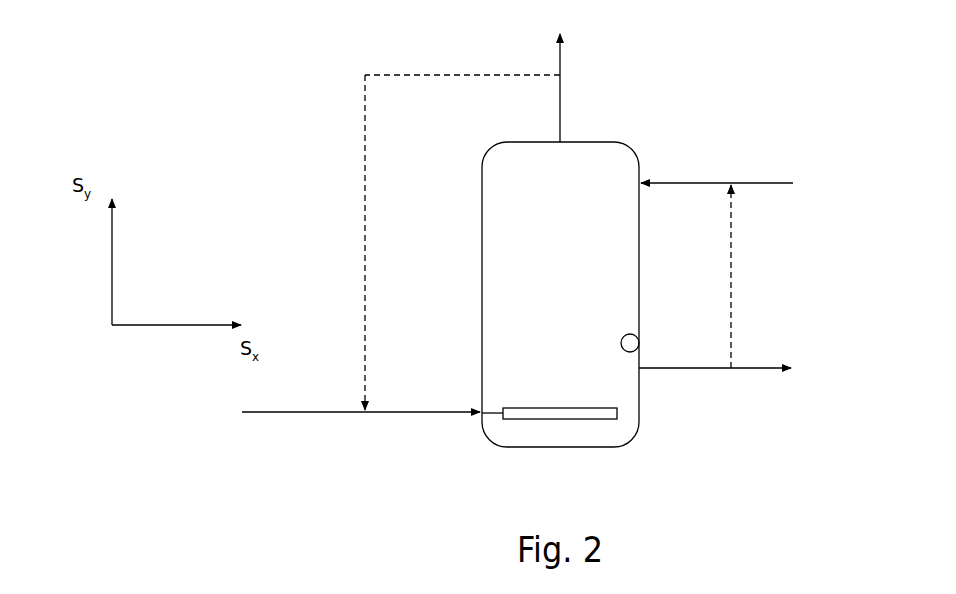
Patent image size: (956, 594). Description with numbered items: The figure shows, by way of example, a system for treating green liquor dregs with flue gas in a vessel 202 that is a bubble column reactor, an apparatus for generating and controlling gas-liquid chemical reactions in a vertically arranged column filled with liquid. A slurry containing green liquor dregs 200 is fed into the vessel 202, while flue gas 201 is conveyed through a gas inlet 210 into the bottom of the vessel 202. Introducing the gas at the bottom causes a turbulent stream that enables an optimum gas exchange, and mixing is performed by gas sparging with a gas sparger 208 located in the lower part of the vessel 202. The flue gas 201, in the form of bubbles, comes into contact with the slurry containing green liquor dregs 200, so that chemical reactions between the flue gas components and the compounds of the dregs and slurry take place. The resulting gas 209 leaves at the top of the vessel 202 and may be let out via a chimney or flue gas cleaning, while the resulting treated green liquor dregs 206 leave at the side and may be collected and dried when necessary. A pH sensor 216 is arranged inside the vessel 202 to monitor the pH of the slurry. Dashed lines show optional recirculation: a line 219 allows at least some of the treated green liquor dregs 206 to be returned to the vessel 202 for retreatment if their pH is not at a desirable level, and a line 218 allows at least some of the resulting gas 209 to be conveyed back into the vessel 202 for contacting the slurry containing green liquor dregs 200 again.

The slurry containing green liquor dregs 200 is at (758, 183).
The flue gas 201 is at (298, 410).
The vessel 202 is at (482, 250).
The treated green liquor dregs 206 is at (668, 368).
The gas sparger 208 is at (562, 408).
The resulting gas 209 is at (560, 118).
The gas inlet 210 is at (493, 408).
The pH sensor 216 is at (625, 334).
The line 218 is at (365, 180).
The line 219 is at (731, 268).